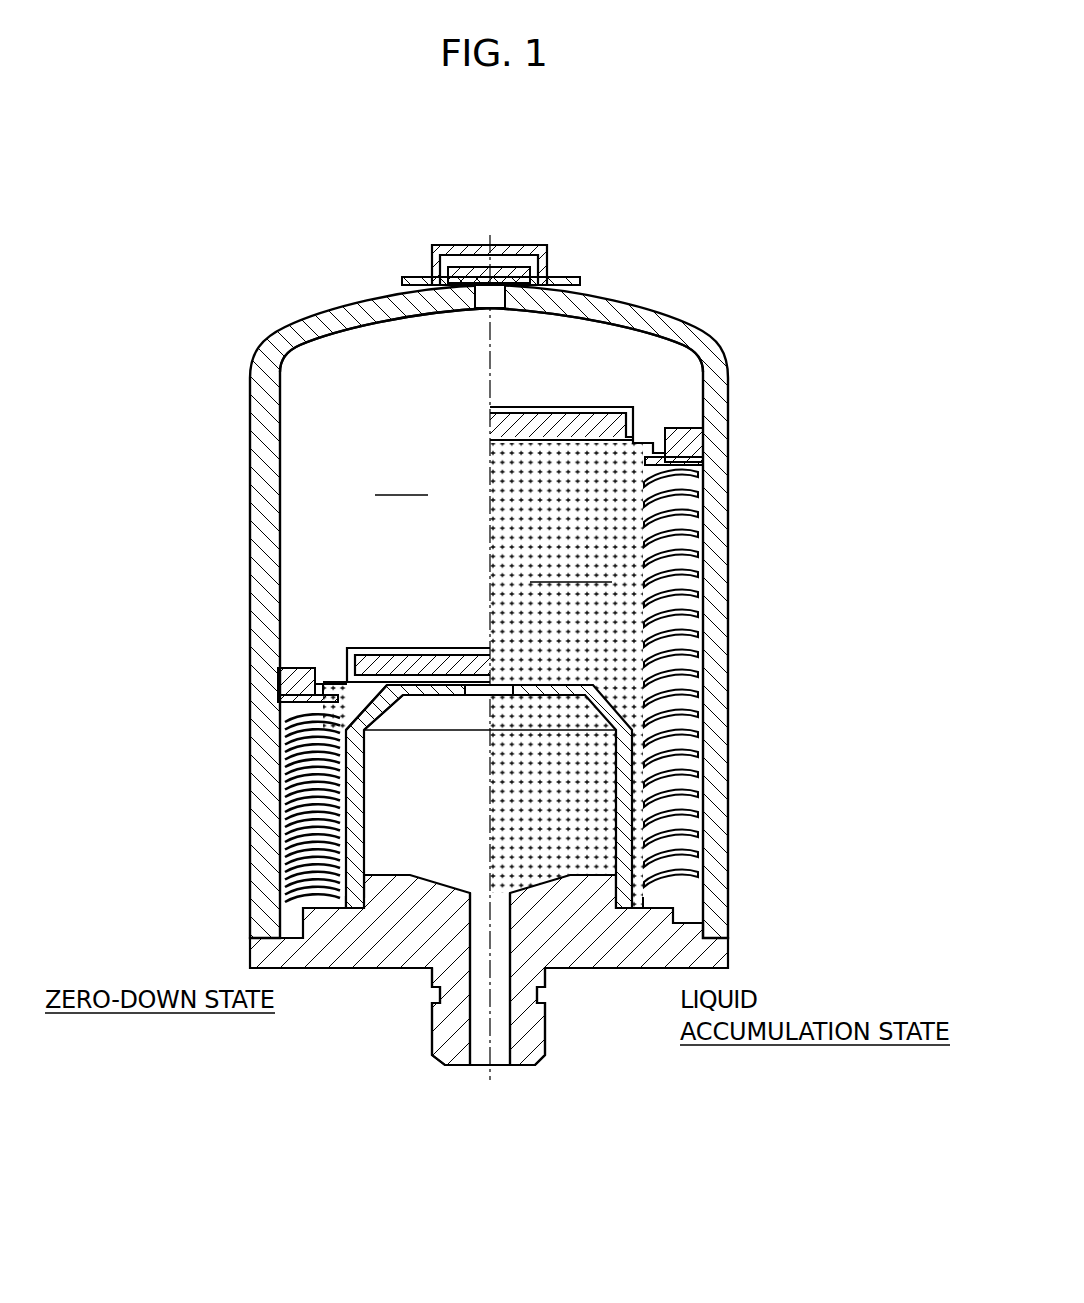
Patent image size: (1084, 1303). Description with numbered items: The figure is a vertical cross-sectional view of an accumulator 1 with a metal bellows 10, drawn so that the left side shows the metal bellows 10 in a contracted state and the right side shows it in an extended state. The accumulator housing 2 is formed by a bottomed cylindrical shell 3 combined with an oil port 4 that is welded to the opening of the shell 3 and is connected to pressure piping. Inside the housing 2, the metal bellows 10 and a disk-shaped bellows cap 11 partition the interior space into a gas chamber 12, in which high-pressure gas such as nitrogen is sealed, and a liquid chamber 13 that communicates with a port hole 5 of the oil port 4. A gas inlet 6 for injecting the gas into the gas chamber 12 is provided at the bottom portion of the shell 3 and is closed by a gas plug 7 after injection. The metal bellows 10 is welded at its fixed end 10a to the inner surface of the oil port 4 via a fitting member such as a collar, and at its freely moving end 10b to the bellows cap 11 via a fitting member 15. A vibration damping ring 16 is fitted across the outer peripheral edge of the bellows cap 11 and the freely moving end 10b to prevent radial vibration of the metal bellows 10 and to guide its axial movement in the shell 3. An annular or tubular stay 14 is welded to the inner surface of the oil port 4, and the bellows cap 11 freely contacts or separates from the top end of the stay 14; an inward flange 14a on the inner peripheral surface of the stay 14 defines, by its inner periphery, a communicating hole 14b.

The accumulator 1 is at (215, 296).
The accumulator housing 2 is at (620, 292).
The shell 3 is at (296, 338).
The oil port 4 is at (580, 930).
The port hole 5 is at (495, 1060).
The gas inlet 6 is at (508, 282).
The gas plug 7 is at (477, 248).
The metal bellows 10 is at (690, 600).
The fixed end 10a is at (665, 905).
The freely moving end 10b is at (700, 462).
The bellows cap 11 is at (595, 410).
The gas chamber 12 is at (368, 352).
The liquid chamber 13 is at (620, 640).
The stay 14 is at (405, 880).
The inward flange 14a is at (348, 684).
The communicating hole 14b is at (470, 697).
The fitting member 15 is at (690, 460).
The vibration damping ring 16 is at (690, 440).